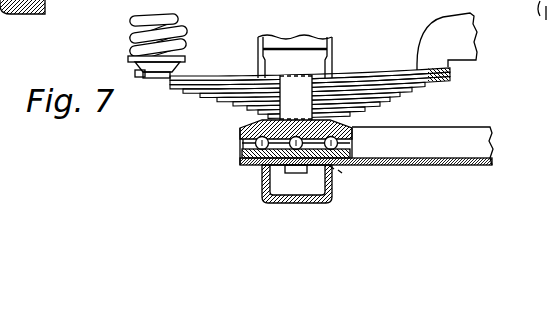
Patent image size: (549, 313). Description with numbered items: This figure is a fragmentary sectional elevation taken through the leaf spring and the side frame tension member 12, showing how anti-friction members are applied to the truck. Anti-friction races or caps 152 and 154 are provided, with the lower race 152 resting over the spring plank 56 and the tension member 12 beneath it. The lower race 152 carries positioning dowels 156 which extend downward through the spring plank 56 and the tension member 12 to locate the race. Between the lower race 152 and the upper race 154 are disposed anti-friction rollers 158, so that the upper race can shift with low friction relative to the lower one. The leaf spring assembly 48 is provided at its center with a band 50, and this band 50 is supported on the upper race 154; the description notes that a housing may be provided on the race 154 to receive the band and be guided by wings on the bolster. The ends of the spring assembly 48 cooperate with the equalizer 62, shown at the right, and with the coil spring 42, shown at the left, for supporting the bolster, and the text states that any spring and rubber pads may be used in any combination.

The tension member 12 is at (333, 190).
The coil spring 42 is at (132, 50).
The spring assembly 48 is at (356, 97).
The band 50 is at (290, 74).
The spring plank 56 is at (427, 165).
The equalizer 62 is at (443, 43).
The anti-friction race 152 is at (240, 156).
The upper race 154 is at (338, 128).
The positioning dowels 156 is at (287, 176).
The anti-friction rollers 158 is at (340, 171).